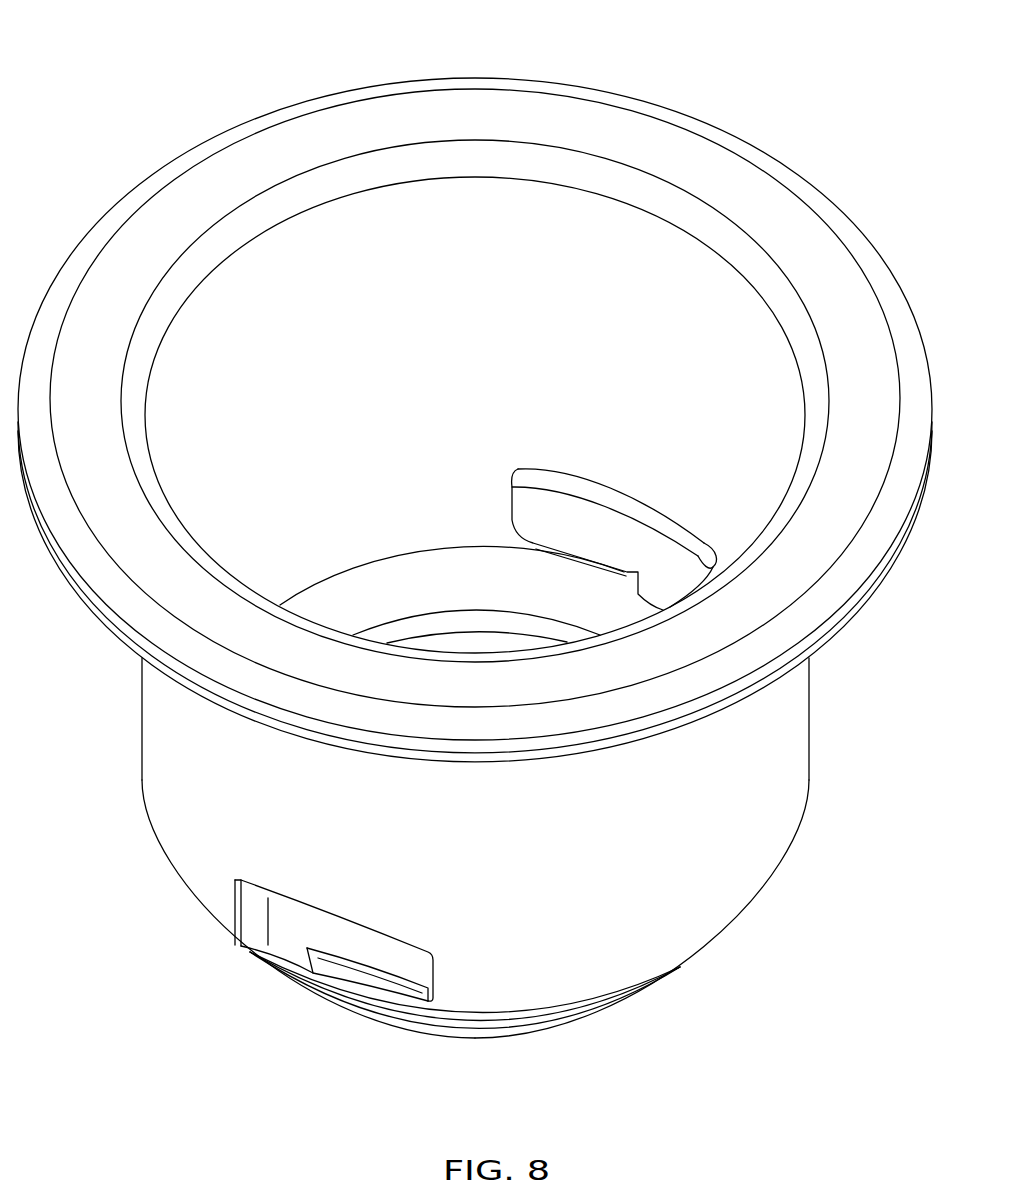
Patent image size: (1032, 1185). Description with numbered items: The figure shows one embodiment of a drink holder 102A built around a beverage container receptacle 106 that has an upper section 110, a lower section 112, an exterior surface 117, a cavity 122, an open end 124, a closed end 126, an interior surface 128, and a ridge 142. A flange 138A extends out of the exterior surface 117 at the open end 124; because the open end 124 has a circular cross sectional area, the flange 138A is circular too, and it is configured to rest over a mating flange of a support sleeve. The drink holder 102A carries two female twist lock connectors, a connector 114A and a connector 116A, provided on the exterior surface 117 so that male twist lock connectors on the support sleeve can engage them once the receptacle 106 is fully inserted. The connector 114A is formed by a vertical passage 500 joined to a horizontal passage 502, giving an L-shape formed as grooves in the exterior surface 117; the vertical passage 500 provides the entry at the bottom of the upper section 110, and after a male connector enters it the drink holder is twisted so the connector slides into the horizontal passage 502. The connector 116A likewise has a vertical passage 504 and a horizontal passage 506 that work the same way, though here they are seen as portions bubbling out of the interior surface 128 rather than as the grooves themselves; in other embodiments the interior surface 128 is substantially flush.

The drink holder 102A is at (812, 86).
The flange 138A is at (832, 242).
The interior surface 128 is at (580, 337).
The open end 124 is at (322, 279).
The cavity 122 is at (499, 287).
The ridge 142 is at (356, 585).
The connector 116A is at (538, 500).
The horizontal passage 506 is at (615, 515).
The vertical passage 504 is at (660, 595).
The upper section 110 is at (142, 722).
The beverage container receptacle 106 is at (809, 718).
The exterior surface 117 is at (160, 826).
The lower section 112 is at (600, 1010).
The closed end 126 is at (432, 1040).
The connector 114A is at (303, 930).
The vertical passage 500 is at (287, 952).
The horizontal passage 502 is at (378, 955).